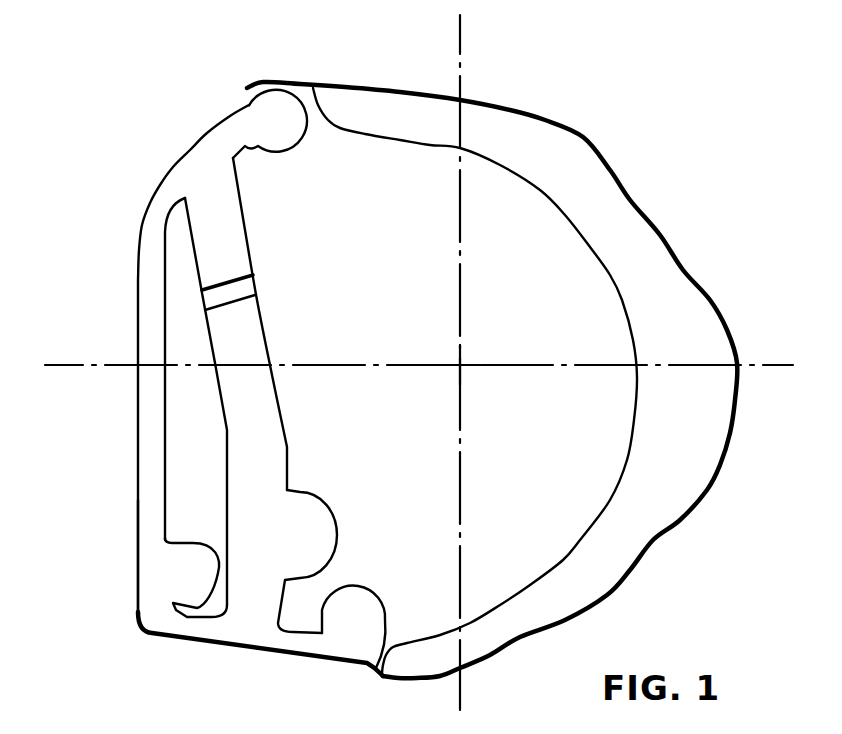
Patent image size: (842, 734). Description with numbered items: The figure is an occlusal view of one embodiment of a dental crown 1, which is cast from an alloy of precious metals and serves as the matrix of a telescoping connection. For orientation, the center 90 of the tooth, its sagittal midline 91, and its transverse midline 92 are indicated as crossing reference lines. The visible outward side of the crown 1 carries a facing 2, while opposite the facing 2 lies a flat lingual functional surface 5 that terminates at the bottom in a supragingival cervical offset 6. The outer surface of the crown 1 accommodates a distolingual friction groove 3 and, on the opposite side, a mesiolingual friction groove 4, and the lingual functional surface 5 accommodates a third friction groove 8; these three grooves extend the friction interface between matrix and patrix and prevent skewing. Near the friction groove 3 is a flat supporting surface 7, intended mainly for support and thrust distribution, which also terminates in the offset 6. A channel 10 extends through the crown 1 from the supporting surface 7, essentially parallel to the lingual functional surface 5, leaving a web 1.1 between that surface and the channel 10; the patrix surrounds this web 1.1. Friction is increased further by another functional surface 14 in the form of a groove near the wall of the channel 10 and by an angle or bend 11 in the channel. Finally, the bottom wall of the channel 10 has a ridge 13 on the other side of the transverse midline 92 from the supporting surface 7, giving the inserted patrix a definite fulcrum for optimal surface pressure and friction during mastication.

The crown 1 is at (537, 207).
The web 1.1 is at (193, 428).
The facing 2 is at (613, 220).
The distolingual friction groove 3 is at (355, 617).
The mesiolingual friction groove 4 is at (273, 123).
The lingual functional surface 5 is at (163, 495).
The supragingival cervical offset 6 is at (152, 533).
The supporting surface 7 is at (197, 617).
The third friction groove 8 is at (190, 577).
The channel 10 is at (230, 342).
The angle or bend 11 is at (288, 447).
The ridge 13 is at (215, 295).
The functional surface 14 is at (320, 527).
The center of the tooth 90 is at (462, 367).
The sagittal midline 91 is at (462, 37).
The transverse midline 92 is at (783, 367).